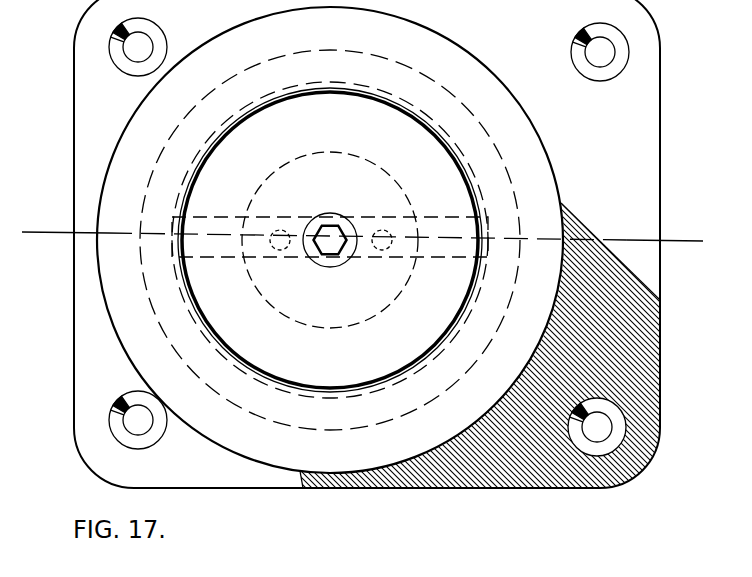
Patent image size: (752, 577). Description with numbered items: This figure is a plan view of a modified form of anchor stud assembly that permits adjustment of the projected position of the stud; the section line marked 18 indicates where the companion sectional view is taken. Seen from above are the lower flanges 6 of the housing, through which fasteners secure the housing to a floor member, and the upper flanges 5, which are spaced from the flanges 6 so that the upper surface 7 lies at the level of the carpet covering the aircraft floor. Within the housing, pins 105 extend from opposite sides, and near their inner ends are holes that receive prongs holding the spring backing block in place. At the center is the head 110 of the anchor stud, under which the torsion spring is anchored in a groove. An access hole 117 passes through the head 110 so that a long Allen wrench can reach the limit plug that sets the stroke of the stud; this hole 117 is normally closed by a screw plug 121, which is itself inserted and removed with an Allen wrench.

The upper flanges 5 is at (537, 127).
The flanges 6 is at (652, 97).
The upper surface 7 is at (497, 131).
The section line 18- 18 is at (34, 232).
The pins 105 is at (330, 240).
The head 110 is at (470, 182).
The access hole 117 is at (327, 212).
The screw plug 121 is at (328, 257).